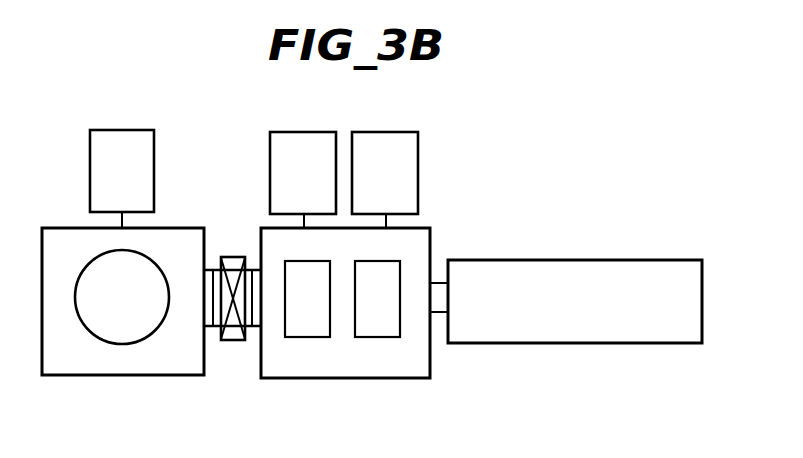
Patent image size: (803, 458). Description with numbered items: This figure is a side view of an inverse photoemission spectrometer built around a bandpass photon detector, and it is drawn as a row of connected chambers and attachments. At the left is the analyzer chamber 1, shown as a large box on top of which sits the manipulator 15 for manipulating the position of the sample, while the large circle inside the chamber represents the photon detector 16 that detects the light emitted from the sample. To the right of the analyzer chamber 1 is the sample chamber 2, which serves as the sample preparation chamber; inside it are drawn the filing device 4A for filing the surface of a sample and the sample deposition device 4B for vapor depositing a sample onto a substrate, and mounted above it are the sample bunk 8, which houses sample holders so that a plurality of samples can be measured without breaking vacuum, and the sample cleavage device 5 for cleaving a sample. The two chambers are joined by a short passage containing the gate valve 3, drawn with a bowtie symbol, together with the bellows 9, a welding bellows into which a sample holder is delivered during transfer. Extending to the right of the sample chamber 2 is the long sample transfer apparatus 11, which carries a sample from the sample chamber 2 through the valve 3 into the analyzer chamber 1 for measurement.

The analyzer chamber 1 is at (108, 368).
The sample chamber 2 is at (343, 358).
The valve 3 is at (232, 344).
The filing device 4A is at (322, 316).
The sample deposition device 4B is at (392, 316).
The sample cleavage device 5 is at (410, 148).
The sample bunk 8 is at (284, 134).
The bellows 9 is at (250, 341).
The sample transfer apparatus 11 is at (586, 260).
The manipulator 15 is at (114, 137).
The photon detector 16 is at (147, 337).